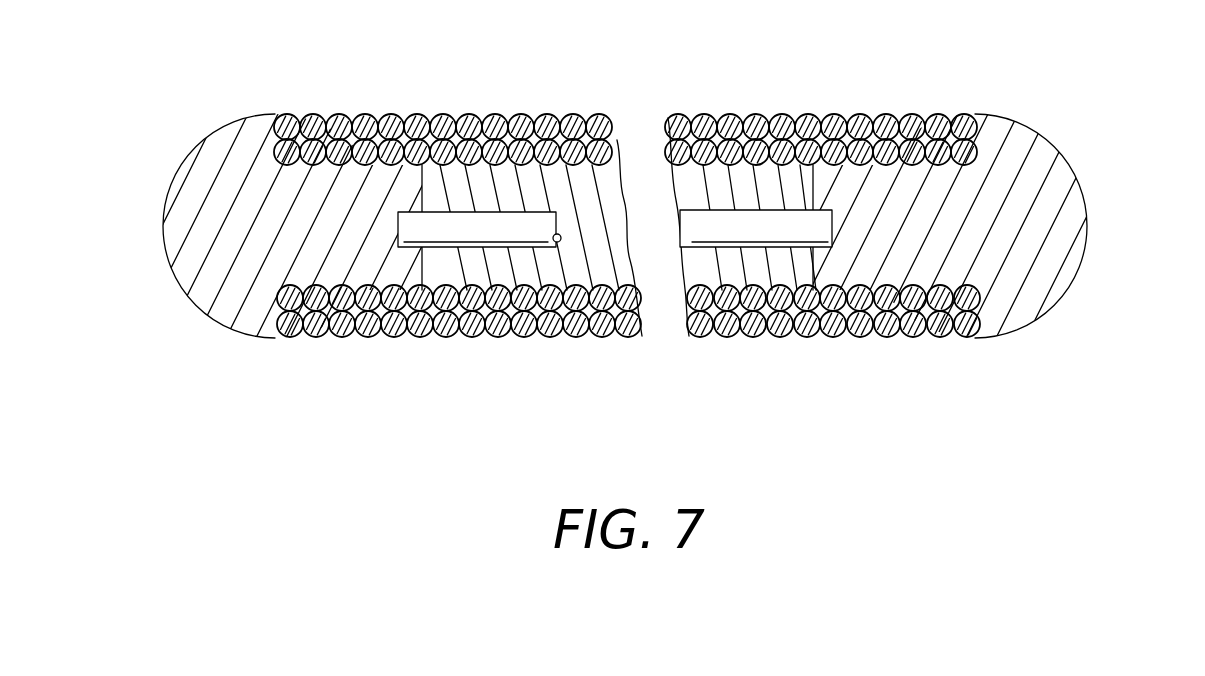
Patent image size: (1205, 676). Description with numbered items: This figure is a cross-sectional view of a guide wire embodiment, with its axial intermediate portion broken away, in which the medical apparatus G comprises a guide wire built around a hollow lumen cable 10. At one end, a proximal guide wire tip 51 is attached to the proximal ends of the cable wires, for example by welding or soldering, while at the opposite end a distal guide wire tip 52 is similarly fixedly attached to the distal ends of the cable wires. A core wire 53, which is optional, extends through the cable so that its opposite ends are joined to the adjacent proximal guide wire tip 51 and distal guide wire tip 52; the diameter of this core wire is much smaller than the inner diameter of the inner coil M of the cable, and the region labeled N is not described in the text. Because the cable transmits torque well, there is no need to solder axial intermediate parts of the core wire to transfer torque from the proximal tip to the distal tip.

The hollow lumen cable 10 is at (872, 339).
The proximal guide wire tip 51 is at (192, 265).
The distal guide wire tip 52 is at (1058, 208).
The core wire 53 is at (500, 232).
The inner coil M is at (698, 127).
The second segment end N is at (725, 338).
The medical apparatus G is at (713, 175).